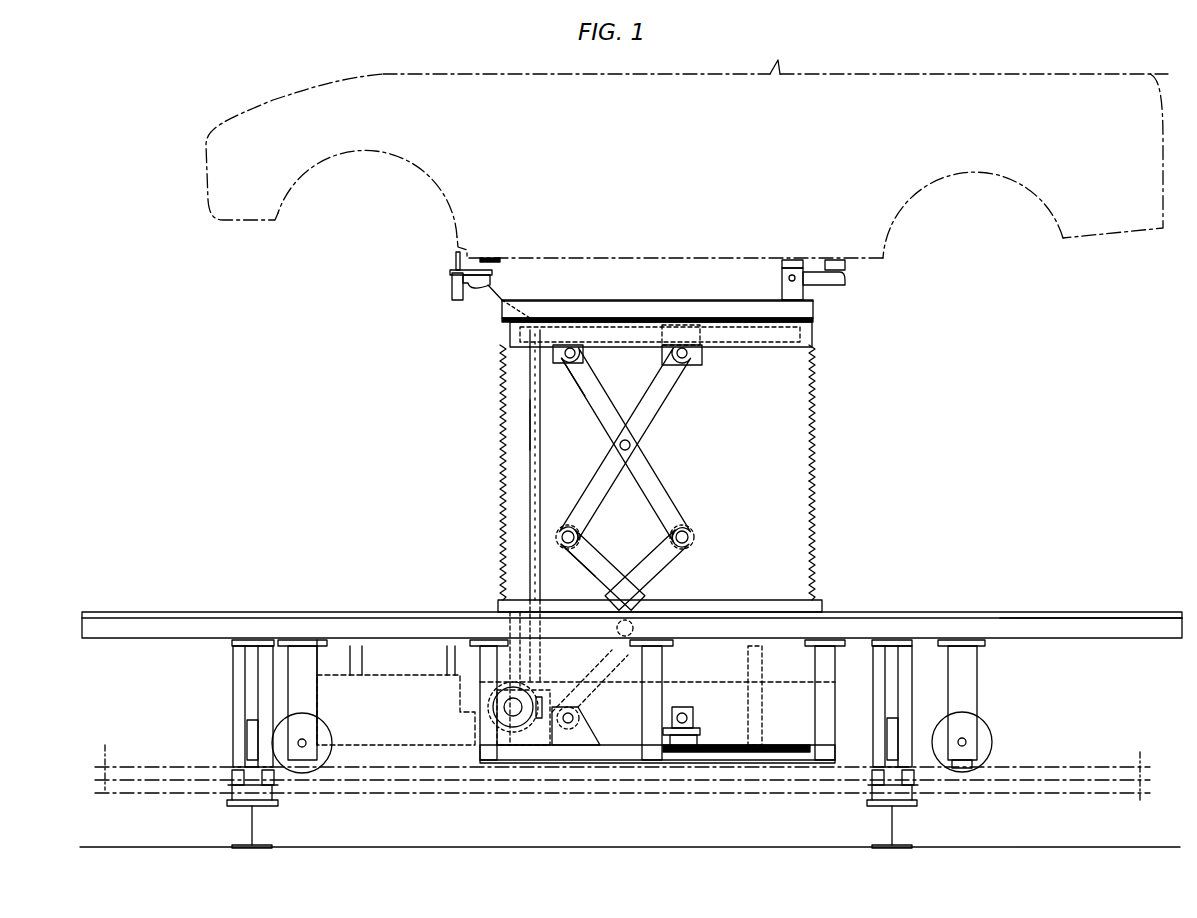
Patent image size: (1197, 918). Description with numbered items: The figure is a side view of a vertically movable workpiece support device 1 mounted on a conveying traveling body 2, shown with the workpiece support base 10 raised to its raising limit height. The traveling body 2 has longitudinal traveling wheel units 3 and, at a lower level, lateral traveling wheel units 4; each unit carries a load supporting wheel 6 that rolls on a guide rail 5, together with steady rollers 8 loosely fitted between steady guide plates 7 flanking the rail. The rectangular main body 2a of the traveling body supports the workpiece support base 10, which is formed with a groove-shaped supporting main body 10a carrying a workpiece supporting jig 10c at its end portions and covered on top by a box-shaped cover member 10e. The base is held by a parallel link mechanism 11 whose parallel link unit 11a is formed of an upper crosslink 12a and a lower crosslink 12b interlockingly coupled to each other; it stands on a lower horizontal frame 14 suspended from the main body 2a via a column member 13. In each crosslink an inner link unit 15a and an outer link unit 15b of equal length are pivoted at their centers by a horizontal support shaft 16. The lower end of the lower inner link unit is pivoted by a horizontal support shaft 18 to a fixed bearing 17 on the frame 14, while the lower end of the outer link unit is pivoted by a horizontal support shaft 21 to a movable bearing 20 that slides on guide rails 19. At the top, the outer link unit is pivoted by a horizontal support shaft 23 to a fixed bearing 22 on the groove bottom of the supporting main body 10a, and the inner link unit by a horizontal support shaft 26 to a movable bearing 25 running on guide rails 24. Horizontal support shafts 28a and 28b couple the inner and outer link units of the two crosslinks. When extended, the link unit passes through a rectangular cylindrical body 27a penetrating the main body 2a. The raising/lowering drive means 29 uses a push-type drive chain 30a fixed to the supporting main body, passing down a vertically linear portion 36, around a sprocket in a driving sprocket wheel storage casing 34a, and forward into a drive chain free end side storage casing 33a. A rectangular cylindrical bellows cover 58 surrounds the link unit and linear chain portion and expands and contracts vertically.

The workpiece support device 1 is at (826, 458).
The conveying traveling body 2 is at (232, 612).
The main body 2a is at (1045, 612).
The longitudinal traveling wheel unit 3 is at (280, 720).
The lateral traveling wheel unit 4 is at (240, 745).
The guide rail 5 is at (125, 760).
The load supporting wheel 6 is at (250, 730).
The steady guide plate 7 is at (95, 775).
The steady roller 8 is at (240, 780).
The workpiece support base 10 is at (720, 318).
The supporting main body 10a is at (812, 345).
The workpiece supporting jig 10c is at (450, 280).
The cover member 10e is at (577, 300).
The parallel link mechanism 11 is at (803, 498).
The parallel link unit 11a is at (803, 413).
The upper crosslink 12a is at (578, 398).
The lower crosslink 12b is at (578, 577).
The column member 13 is at (490, 655).
The lower horizontal frame 14 is at (630, 763).
The inner link unit 15a is at (585, 500).
The outer link unit 15b is at (603, 412).
The horizontal support shaft 16 is at (635, 447).
The fixed bearing 17 is at (568, 745).
The horizontal support shaft 18 is at (575, 718).
The guide rail 19 is at (730, 752).
The movable bearing 20 is at (700, 718).
The horizontal support shaft 21 is at (690, 716).
The fixed bearing 22 is at (553, 350).
The horizontal support shaft 23 is at (578, 352).
The guide rail 24 is at (745, 345).
The movable bearing 25 is at (697, 355).
The horizontal support shaft 26 is at (685, 340).
The rectangular cylindrical body 27a is at (755, 650).
The horizontal support shaft 28a is at (556, 537).
The horizontal support shaft 28b is at (694, 537).
The raising/lowering drive means 29 is at (510, 745).
The drive chain 30a is at (525, 425).
The drive chain free end side storage casing 33a is at (390, 675).
The driving sprocket wheel storage casing 34a is at (512, 745).
The vertically linear portion 36 is at (525, 498).
The bellows cover 58 is at (813, 522).